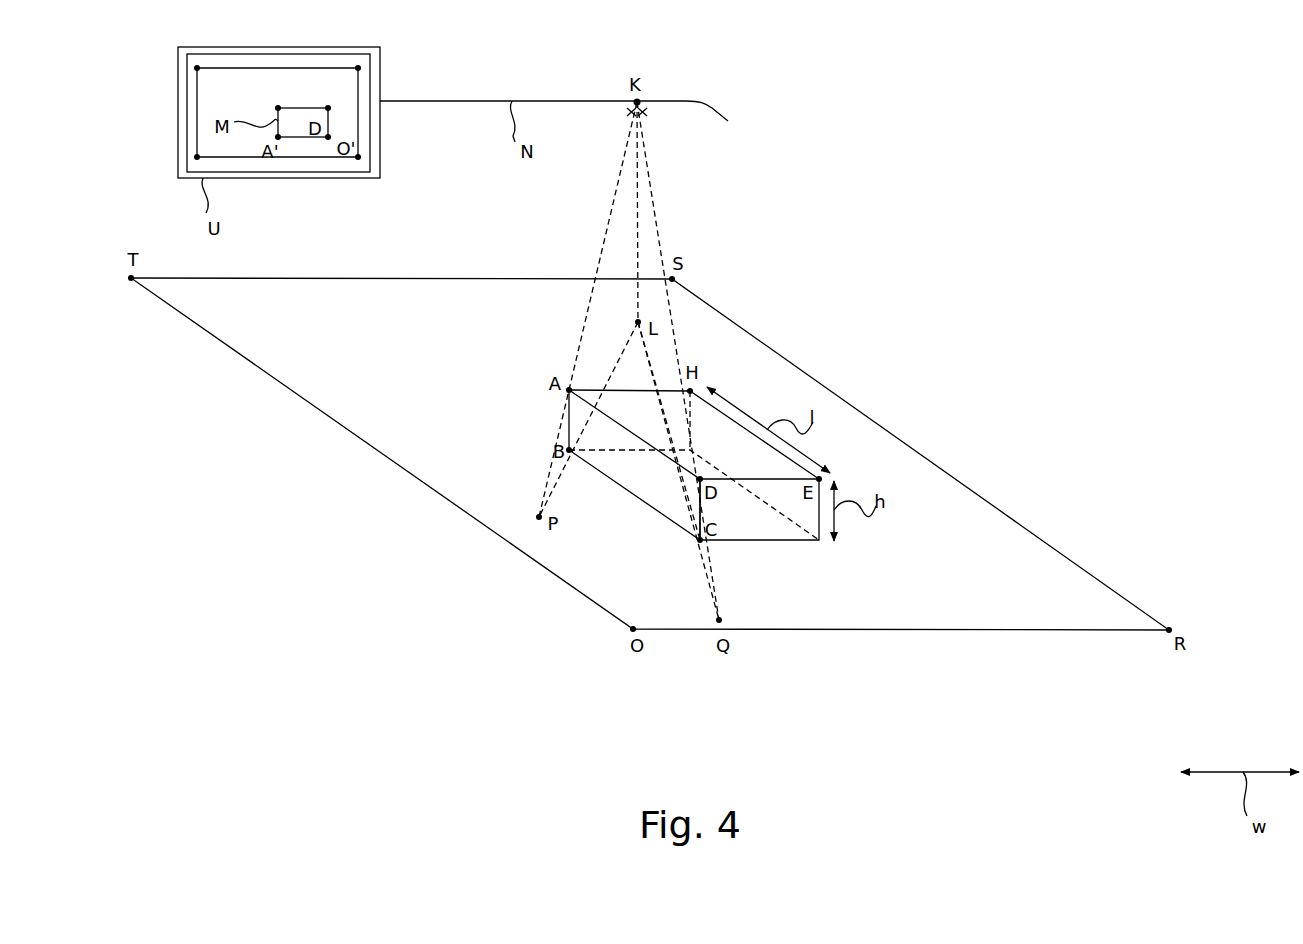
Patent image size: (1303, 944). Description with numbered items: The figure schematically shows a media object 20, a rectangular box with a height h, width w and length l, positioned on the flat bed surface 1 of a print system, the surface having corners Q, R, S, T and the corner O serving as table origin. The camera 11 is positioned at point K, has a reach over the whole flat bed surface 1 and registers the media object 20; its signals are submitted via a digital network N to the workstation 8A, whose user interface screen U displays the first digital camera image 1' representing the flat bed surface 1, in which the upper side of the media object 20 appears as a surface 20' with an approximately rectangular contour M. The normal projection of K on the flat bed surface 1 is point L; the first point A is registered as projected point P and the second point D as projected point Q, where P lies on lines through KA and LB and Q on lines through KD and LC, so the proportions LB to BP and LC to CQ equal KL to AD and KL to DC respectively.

The flat bed surface 1 is at (650, 479).
The first digital camera image 1' is at (278, 139).
The media object 20 is at (694, 478).
The surface 20' is at (303, 164).
The workstation 8A is at (375, 178).
The camera 11 is at (569, 122).